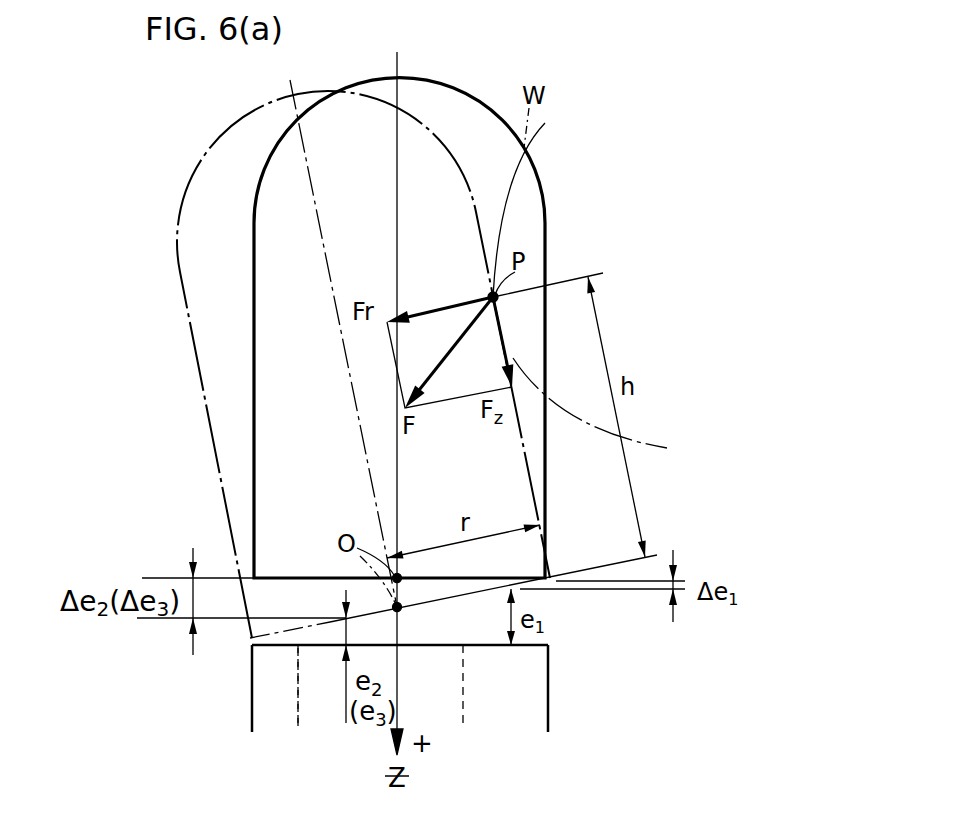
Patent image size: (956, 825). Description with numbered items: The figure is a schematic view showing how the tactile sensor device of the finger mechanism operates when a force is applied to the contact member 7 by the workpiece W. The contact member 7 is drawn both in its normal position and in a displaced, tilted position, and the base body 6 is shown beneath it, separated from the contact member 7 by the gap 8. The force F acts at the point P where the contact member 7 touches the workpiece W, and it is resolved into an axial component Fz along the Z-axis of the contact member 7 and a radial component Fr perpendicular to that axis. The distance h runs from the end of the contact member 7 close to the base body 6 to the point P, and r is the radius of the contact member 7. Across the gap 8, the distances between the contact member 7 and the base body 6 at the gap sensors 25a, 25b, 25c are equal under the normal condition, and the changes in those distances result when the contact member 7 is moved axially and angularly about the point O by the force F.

The contact member 7 is at (472, 192).
The gap 8 is at (467, 622).
The base body 6 is at (548, 690).
The gap sensor 25a is at (518, 705).
The gap sensor 25b is at (318, 682).
The gap sensor 25c is at (220, 687).